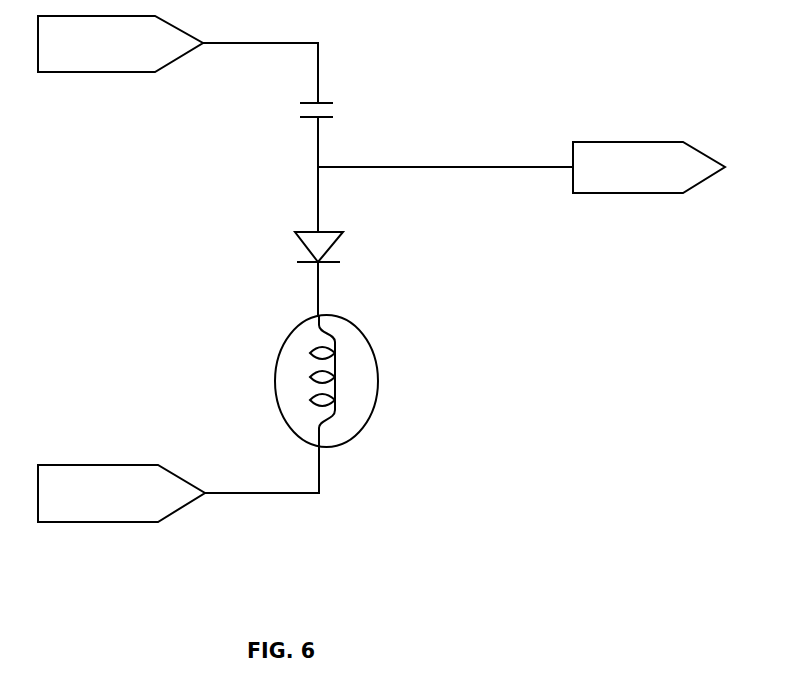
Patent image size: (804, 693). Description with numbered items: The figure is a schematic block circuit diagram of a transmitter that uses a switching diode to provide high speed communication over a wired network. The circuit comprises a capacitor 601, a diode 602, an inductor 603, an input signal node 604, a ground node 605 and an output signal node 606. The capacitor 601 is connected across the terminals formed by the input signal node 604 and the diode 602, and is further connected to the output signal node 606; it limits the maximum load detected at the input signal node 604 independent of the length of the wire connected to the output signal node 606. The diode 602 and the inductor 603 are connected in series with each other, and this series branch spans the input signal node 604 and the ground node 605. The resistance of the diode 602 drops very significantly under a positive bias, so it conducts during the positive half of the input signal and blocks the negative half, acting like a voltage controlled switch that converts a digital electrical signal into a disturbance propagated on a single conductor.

The capacitor (C1) 601 is at (327, 102).
The diode (D1) 602 is at (340, 238).
The inductor (L1) 603 is at (378, 365).
The input signal node (Tx_in) 604 is at (110, 72).
The ground node (Tx_Vss) 605 is at (127, 465).
The output signal node (Tx_Out) 606 is at (647, 193).